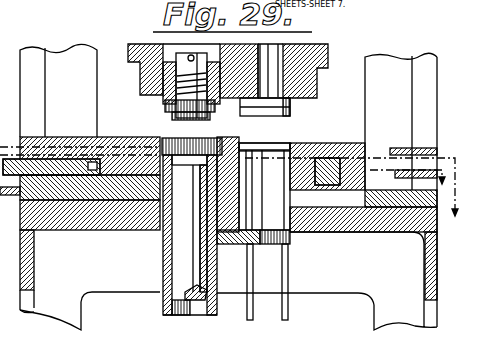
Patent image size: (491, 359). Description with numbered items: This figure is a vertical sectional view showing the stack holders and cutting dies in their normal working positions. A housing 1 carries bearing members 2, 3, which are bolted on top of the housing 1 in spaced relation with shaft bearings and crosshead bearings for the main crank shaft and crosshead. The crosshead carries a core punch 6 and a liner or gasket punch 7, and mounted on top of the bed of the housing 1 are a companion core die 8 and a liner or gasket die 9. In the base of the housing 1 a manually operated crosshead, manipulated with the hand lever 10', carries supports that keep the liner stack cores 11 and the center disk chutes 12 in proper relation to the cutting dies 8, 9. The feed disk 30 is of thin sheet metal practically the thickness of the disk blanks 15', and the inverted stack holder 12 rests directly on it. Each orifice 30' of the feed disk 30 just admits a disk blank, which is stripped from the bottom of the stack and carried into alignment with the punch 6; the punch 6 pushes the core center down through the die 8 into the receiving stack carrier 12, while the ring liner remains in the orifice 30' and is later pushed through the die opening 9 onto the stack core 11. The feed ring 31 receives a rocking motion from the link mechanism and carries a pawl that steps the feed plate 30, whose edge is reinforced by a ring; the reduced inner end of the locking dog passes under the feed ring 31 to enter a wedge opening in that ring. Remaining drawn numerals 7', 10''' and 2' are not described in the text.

The housing 1 is at (388, 326).
The bearing member 2 is at (401, 121).
The bearing member 3 is at (31, 64).
The core punch 6 is at (291, 111).
The liner or gasket punch 7 is at (170, 85).
The nut 7' is at (169, 115).
The core die 8 is at (294, 174).
The liner or gasket die 9 is at (214, 149).
The hand lever 10' is at (80, 178).
The plunger tip 10''' is at (195, 317).
The stack core 11 is at (163, 262).
The center disk chute 12 is at (289, 310).
The disk blank 15' is at (18, 333).
The feed disk 30 is at (327, 154).
The orifice 30' is at (264, 135).
The feed ring 31 is at (362, 148).
The post 2' is at (5, 243).